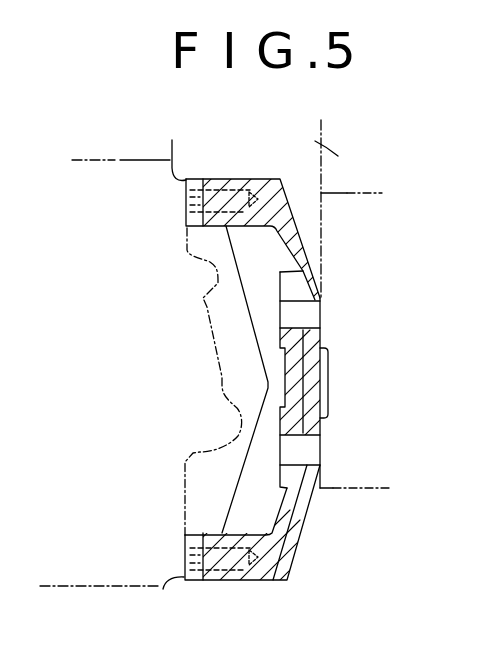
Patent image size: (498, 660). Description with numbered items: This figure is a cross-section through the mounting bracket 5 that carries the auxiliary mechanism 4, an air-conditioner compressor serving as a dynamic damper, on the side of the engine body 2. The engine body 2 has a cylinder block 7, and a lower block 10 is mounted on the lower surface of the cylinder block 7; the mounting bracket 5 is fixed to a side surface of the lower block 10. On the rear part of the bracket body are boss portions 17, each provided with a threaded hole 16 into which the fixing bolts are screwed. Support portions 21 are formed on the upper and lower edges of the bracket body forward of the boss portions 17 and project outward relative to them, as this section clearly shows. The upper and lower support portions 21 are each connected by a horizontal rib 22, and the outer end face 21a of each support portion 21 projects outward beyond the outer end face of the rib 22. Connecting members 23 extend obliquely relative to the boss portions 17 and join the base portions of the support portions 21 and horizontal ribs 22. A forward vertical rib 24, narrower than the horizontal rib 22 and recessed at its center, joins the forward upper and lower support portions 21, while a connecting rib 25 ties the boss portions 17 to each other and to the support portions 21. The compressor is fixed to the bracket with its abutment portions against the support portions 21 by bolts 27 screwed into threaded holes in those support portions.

The engine body 2 is at (398, 150).
The auxiliary mechanism 4 is at (103, 167).
The mounting bracket 5 is at (233, 160).
The cylinder block 7 is at (313, 140).
The lower block 10 is at (377, 488).
The threaded hole 16 is at (312, 315).
The boss portion 17 is at (281, 287).
The support portion 21 is at (208, 178).
The outer end face 21a is at (176, 130).
The horizontal rib 22 is at (265, 188).
The connecting member 23 is at (294, 230).
The forward vertical rib 24 is at (247, 478).
The connecting rib 25 is at (300, 377).
The bolt 27 is at (178, 207).